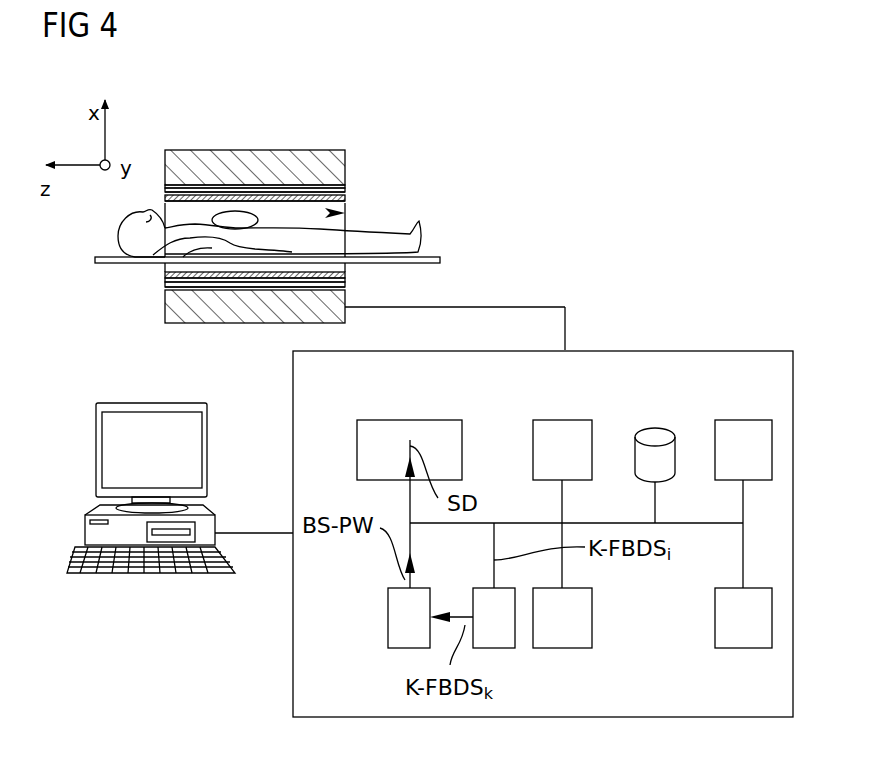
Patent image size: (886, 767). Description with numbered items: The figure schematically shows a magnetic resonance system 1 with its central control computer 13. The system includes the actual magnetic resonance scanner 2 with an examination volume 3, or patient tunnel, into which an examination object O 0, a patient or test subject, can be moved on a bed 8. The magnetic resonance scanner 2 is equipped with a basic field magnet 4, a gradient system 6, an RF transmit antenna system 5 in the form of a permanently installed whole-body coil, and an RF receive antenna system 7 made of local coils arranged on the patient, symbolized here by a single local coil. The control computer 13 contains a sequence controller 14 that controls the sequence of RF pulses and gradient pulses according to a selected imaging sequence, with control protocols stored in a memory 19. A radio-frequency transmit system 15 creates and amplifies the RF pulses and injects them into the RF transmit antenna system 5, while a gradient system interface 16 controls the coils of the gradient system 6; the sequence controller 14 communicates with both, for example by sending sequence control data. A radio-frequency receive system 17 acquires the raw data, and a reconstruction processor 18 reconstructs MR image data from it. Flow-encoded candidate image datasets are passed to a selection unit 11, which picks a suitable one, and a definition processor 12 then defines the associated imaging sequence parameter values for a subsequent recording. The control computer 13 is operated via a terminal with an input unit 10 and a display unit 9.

The examination object 0 is at (418, 240).
The magnetic resonance system 1 is at (686, 117).
The magnetic resonance scanner 2 is at (283, 150).
The examination volume 3 is at (345, 208).
The basic field magnet 4 is at (165, 305).
The RF transmit antenna system 5 is at (165, 198).
The gradient system 6 is at (345, 182).
The RF receive antenna system 7 is at (235, 220).
The bed 8 is at (440, 261).
The display unit 9 is at (150, 403).
The input unit 10 is at (150, 575).
The selection unit 11 is at (480, 588).
The definition processor 12 is at (388, 617).
The control computer 13 is at (667, 350).
The sequence controller 14 is at (410, 420).
The radio-frequency transmit system 15 is at (562, 420).
The gradient system interface 16 is at (562, 648).
The radio-frequency receive system 17 is at (745, 420).
The reconstruction processor 18 is at (715, 617).
The memory 19 is at (655, 428).